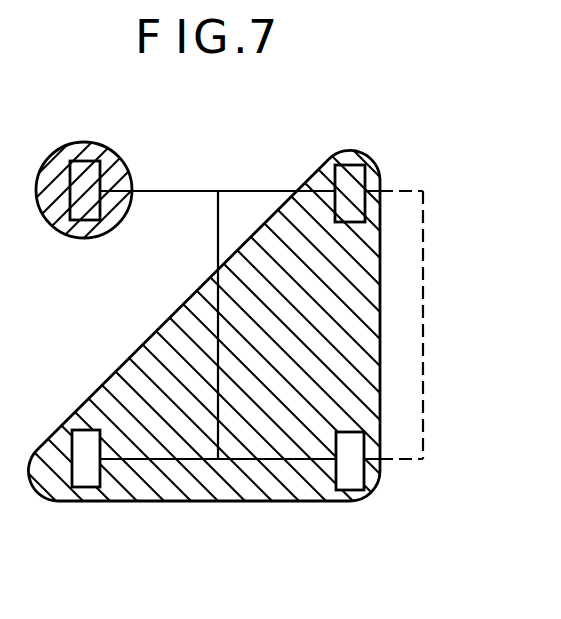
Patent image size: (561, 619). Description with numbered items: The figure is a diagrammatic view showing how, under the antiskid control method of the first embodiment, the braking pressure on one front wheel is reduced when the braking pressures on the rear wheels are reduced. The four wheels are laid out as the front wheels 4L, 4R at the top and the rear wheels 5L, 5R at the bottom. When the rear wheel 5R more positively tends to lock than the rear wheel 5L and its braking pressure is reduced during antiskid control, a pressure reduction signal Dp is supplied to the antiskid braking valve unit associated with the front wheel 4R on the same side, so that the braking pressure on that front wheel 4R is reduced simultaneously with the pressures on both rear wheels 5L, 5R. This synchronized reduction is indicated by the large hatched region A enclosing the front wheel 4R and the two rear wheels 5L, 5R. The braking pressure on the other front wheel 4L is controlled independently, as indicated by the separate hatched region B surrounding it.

The front wheel 4L is at (80, 219).
The front wheel 4R is at (354, 170).
The rear wheel 5L is at (82, 480).
The rear wheel 5R is at (353, 482).
The hatched region A is at (69, 418).
The hatched region B is at (109, 226).
The pressure reduction signal Dp is at (423, 335).